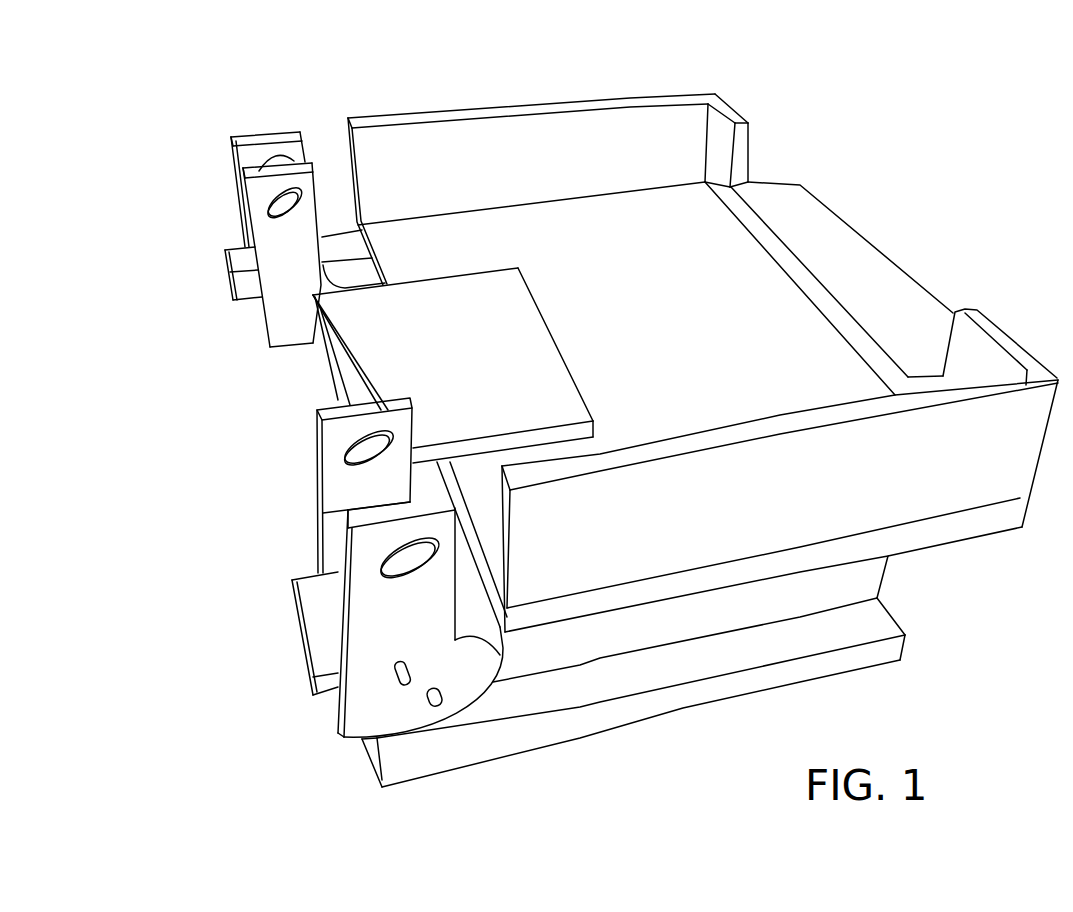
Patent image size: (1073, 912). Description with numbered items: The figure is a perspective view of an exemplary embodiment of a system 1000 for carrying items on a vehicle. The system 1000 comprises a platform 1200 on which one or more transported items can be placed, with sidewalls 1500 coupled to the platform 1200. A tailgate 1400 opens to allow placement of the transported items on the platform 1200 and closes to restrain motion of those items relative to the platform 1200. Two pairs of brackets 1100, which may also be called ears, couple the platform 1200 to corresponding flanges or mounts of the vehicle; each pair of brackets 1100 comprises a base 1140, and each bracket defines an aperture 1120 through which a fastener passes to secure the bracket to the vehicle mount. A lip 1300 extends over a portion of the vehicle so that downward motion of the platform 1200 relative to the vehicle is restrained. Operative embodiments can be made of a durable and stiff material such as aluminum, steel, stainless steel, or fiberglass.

The system 1000 is at (441, 50).
The brackets 1100 is at (230, 171).
The aperture 1120 is at (275, 210).
The base 1140 is at (328, 613).
The platform 1200 is at (548, 210).
The lip 1300 is at (453, 365).
The tailgate 1400 is at (881, 288).
The sidewalls 1500 is at (710, 583).